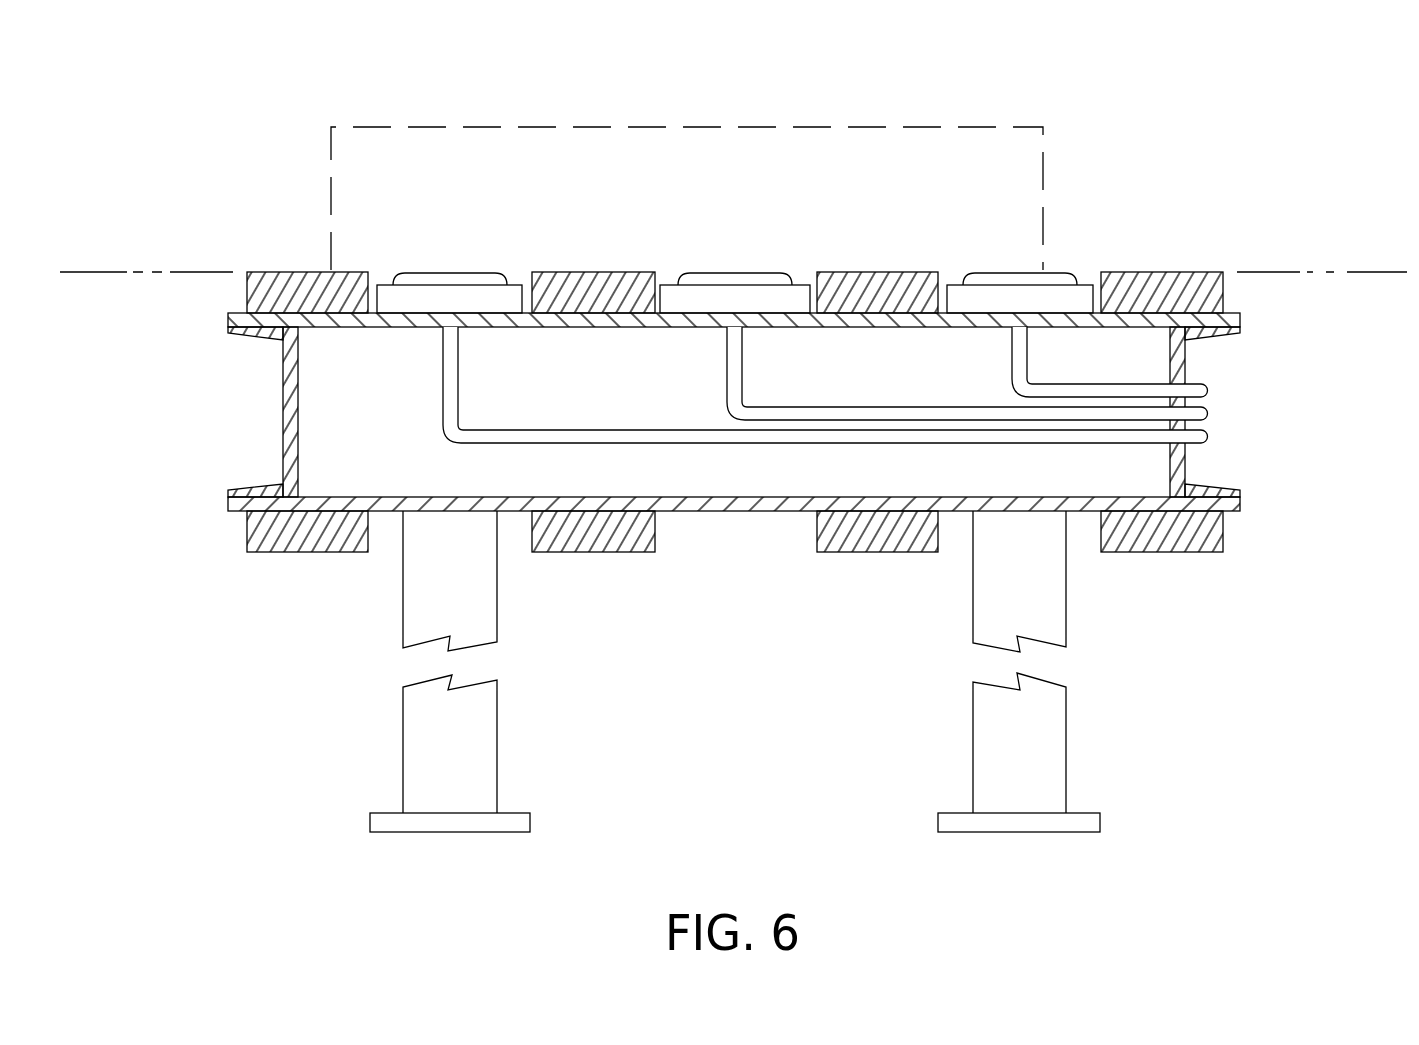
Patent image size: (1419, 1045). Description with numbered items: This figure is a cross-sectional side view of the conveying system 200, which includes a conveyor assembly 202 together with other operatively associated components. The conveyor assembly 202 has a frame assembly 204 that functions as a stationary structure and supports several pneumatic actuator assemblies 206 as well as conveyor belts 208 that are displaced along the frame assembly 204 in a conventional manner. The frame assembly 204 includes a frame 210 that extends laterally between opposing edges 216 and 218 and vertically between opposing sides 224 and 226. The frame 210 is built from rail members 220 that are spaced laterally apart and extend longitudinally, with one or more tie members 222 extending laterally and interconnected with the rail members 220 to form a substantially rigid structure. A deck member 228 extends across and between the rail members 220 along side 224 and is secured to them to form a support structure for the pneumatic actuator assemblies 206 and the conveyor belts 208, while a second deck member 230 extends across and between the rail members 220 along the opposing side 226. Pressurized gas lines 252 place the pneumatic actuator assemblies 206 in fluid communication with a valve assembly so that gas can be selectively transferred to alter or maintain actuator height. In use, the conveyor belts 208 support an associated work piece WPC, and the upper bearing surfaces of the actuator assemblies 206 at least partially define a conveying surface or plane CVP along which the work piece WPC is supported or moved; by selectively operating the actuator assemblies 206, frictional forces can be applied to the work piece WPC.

The conveying system 200 is at (1085, 97).
The conveyor assembly 202 is at (208, 577).
The frame assembly 204 is at (223, 505).
The pneumatic actuator assembly 206 is at (493, 272).
The conveyor belt 208 is at (880, 272).
The frame 210 is at (283, 400).
The edge 216 is at (210, 225).
The edge 218 is at (1290, 590).
The rail member 220 is at (293, 430).
The tie member 222 is at (330, 380).
The side 224 is at (764, 56).
The side 226 is at (764, 741).
The deck member 228 is at (384, 328).
The deck member 230 is at (721, 513).
The pressurized gas line 252 is at (598, 430).
The work piece WPC is at (963, 127).
The conveying plane CVP is at (1357, 270).